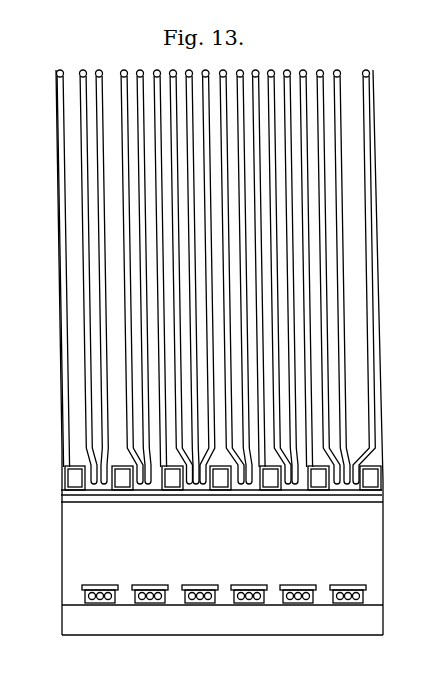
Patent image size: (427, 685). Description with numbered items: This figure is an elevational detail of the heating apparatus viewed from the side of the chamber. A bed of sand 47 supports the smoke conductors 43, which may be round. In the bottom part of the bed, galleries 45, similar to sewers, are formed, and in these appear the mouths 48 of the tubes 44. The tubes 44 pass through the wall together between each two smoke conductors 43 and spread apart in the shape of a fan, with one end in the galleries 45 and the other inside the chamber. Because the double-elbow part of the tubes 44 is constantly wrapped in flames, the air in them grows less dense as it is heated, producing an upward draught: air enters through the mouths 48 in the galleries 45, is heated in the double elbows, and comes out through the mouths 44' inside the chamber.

The smoke conductors 43 is at (65, 475).
The tubes 44 is at (121, 303).
The mouths inside the chamber 44' is at (216, 260).
The galleries 45 is at (95, 605).
The bed of sand 47 is at (90, 500).
The mouths of the tubes 48 is at (192, 590).